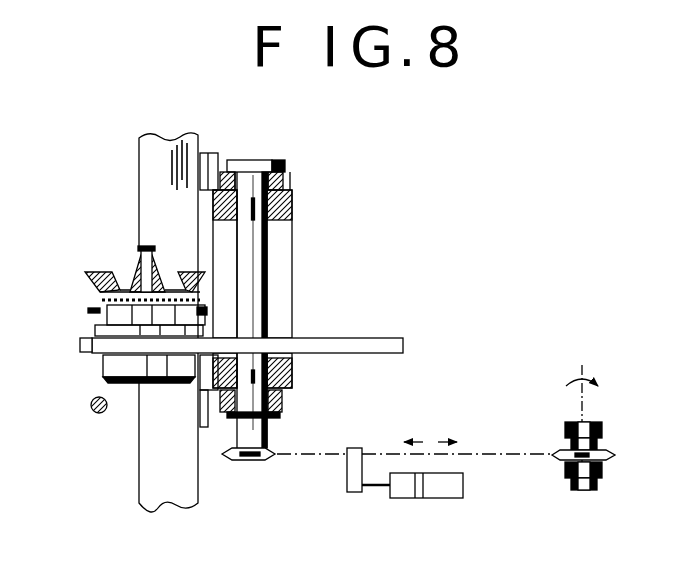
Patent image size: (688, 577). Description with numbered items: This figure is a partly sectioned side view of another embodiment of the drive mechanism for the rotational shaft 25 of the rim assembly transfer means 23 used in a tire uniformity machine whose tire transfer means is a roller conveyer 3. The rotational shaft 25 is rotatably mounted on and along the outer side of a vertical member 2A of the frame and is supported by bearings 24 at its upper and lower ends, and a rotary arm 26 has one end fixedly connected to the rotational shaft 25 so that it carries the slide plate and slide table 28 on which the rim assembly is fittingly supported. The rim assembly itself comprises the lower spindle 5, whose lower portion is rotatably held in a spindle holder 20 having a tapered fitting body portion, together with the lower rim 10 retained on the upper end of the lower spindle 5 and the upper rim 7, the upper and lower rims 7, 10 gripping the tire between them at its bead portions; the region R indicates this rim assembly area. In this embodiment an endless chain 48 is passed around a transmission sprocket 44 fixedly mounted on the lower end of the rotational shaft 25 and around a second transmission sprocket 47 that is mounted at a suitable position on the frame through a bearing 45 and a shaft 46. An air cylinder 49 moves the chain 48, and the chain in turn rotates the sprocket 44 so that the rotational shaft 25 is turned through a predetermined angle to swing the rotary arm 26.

The vertical member 2A is at (139, 168).
The roller conveyer 3 is at (100, 413).
The lower spindle 5 is at (160, 265).
The upper rim 7 is at (90, 285).
The lower rim 10 is at (96, 312).
The spindle holder 20 is at (105, 360).
The rim assembly transfer means 23 is at (408, 313).
The bearings 24 is at (286, 171).
The rotational shaft 25 is at (265, 246).
The rotary arm 26 is at (290, 362).
The slide table 28 is at (350, 338).
The transmission sprocket 44 is at (235, 470).
The bearing 45 is at (567, 430).
The shaft 46 is at (592, 428).
The transmission sprocket 47 is at (556, 453).
The endless chain 48 is at (330, 450).
The air cylinder 49 is at (404, 498).
The region R is at (82, 298).